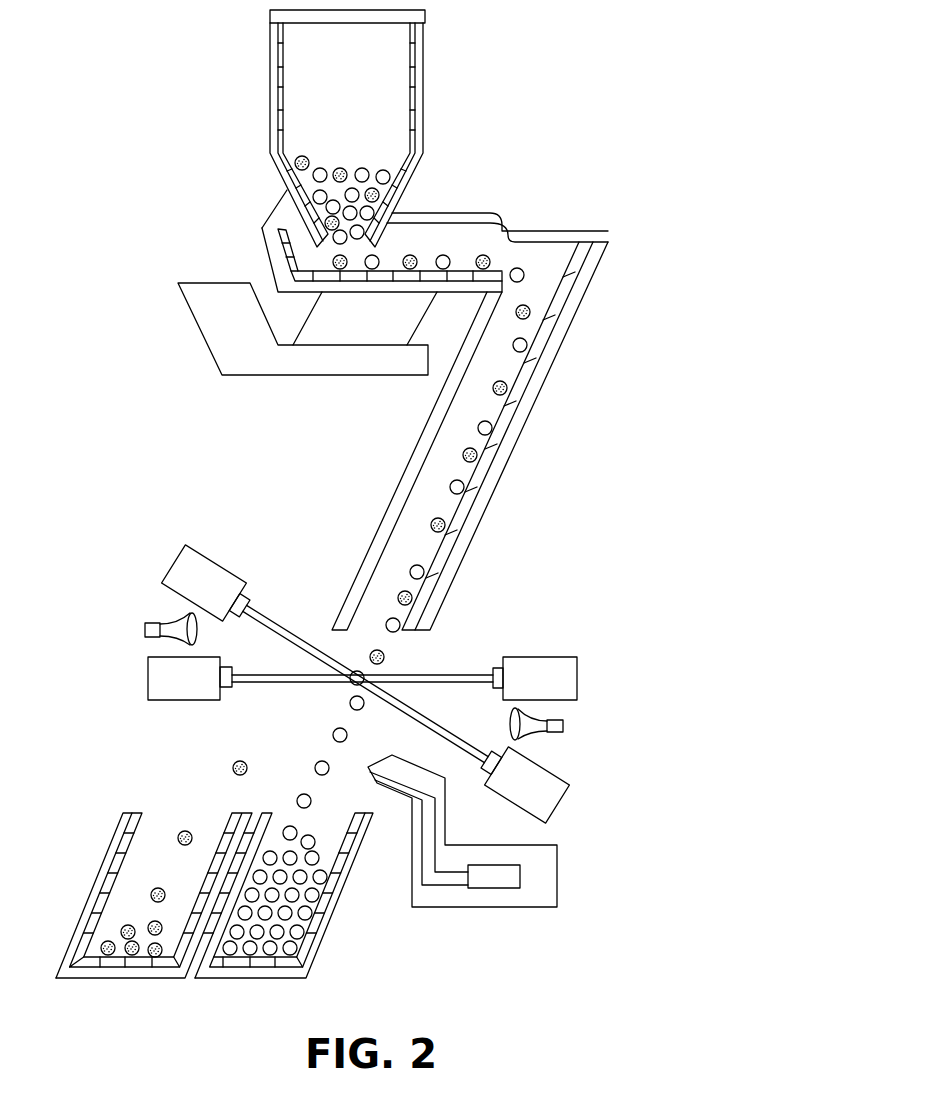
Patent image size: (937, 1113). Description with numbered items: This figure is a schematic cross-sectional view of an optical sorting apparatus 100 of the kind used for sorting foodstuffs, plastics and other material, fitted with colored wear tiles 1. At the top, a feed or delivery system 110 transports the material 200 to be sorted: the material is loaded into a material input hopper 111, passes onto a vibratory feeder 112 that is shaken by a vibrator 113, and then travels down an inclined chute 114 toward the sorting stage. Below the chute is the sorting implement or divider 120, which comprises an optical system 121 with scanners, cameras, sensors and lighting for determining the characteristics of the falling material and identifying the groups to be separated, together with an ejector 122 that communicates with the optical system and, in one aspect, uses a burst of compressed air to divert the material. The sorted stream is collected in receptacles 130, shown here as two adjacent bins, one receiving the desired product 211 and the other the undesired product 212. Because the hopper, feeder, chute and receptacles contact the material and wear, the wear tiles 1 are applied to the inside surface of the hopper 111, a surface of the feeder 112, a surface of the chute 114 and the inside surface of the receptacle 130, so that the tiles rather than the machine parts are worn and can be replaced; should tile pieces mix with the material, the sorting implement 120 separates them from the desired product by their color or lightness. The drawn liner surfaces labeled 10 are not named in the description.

The wear tile 1 is at (311, 510).
The liner / lining plate 10 is at (283, 110).
The sorting apparatus 100 is at (398, 538).
The feed or delivery system 110 is at (383, 488).
The material input hopper 111 is at (426, 60).
The vibratory feeder/conveyor 112 is at (262, 238).
The vibrator 113 is at (195, 317).
The chute 114 is at (587, 290).
The sorting implement or divider 120 is at (379, 726).
The optical system 121 is at (178, 557).
The ejector 122 is at (545, 875).
The receptacle 130 is at (235, 940).
The material 200 is at (354, 152).
The desired product 211 is at (335, 840).
The undesired product 212 is at (138, 878).